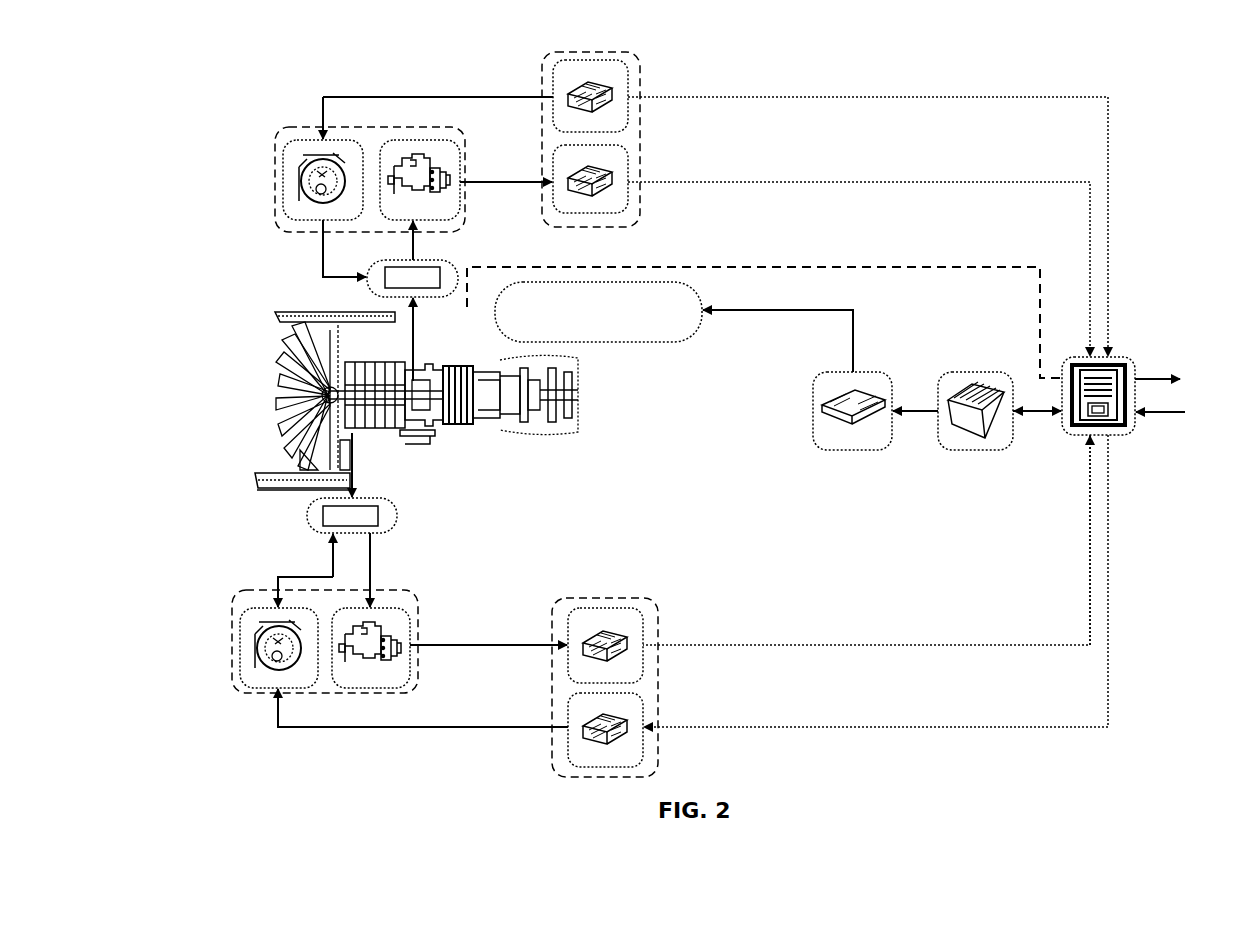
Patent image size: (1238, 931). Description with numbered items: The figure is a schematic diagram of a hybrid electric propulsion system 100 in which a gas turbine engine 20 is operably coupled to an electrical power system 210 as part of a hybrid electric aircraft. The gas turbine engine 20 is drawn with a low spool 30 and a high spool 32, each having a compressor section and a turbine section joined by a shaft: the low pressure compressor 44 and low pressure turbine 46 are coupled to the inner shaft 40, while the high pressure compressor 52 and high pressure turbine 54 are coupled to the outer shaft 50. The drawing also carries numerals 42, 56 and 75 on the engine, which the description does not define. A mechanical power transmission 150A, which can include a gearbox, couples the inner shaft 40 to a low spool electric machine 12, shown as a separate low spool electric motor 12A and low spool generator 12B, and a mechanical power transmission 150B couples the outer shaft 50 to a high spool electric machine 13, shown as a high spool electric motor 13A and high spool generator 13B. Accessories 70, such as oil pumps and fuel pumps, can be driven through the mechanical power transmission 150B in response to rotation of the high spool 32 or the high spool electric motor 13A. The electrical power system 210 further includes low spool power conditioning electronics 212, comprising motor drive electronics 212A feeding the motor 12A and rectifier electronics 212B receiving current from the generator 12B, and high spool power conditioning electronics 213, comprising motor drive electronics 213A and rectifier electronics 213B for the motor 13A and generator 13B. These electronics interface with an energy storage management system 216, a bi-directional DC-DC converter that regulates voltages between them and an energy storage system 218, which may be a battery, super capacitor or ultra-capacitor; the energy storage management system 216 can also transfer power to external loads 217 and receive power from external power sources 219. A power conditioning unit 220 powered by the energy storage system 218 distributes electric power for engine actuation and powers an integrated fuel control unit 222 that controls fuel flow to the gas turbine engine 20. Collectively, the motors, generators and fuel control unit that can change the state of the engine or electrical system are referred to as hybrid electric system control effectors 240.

The hybrid electric propulsion system 100 is at (138, 110).
The electrical power system 210 is at (466, 246).
The hybrid electric system control effectors 240 is at (797, 238).
The high spool electric machine 13 is at (318, 126).
The high spool electric motor 13A is at (283, 178).
The high spool generator 13B is at (458, 144).
The mechanical power transmission 150B is at (394, 262).
The accessories 70 is at (437, 301).
The high spool power conditioning electronics 213 is at (642, 82).
The motor drive electronics 213A is at (552, 86).
The rectifier electronics 213B is at (632, 162).
The integrated fuel control unit 222 is at (658, 342).
The power conditioning unit 220 is at (852, 452).
The energy storage system 218 is at (976, 452).
The energy storage management system 216 is at (1133, 430).
The external loads 217 is at (1162, 378).
The external power sources 219 is at (1168, 410).
The mechanical power transmission 150A is at (400, 515).
The low spool electric machine 12 is at (378, 597).
The low spool electric motor 12A is at (240, 655).
The low spool generator 12B is at (410, 625).
The low spool power conditioning electronics 212 is at (582, 597).
The motor drive electronics 212A is at (643, 700).
The rectifier electronics 212B is at (643, 616).
The gas turbine engine 20 is at (250, 324).
The low spool 30 is at (303, 311).
The inner shaft 40 is at (288, 366).
The fan blades 42 is at (282, 426).
The low pressure compressor 44 is at (408, 462).
The outer shaft 50 is at (426, 372).
The high pressure compressor 52 is at (448, 432).
The high spool 32 is at (488, 398).
The shaft 56 is at (472, 438).
The fuel injector 75 is at (506, 428).
The low pressure turbine 46 is at (530, 432).
The high pressure turbine 54 is at (560, 432).